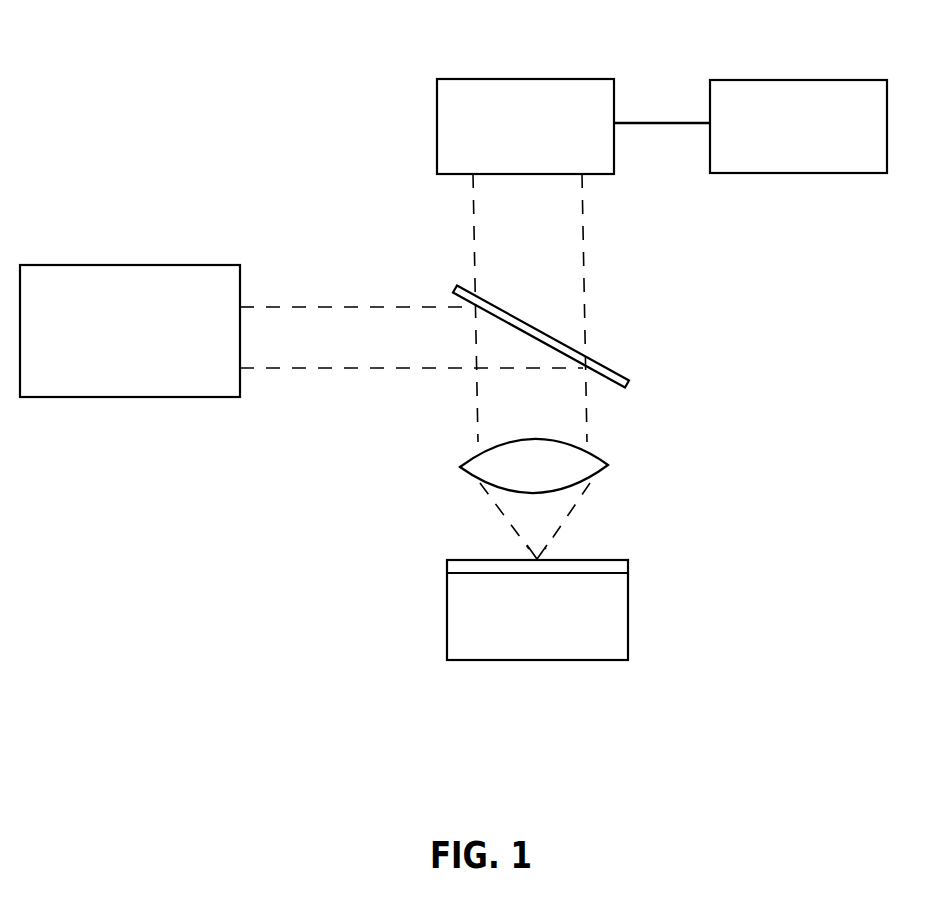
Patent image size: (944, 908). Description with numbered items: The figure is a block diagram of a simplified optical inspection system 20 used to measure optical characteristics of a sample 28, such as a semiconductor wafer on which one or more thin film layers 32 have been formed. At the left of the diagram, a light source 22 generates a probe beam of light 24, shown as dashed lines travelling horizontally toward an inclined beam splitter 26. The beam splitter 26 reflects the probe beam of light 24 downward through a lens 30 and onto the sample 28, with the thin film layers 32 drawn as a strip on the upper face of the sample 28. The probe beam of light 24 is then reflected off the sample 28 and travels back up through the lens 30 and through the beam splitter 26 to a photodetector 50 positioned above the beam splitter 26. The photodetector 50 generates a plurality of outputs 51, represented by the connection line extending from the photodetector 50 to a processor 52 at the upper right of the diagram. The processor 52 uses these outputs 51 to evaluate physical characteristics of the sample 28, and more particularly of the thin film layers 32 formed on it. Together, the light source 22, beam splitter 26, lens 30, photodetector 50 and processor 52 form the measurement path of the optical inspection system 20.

The optical inspection system 20 is at (717, 262).
The light source 22 is at (117, 265).
The probe beam of light 24 is at (320, 307).
The beam splitter 26 is at (607, 368).
The sample 28 is at (628, 600).
The lens 30 is at (596, 455).
The thin film layers 32 is at (610, 560).
The photodetector 50 is at (503, 78).
The outputs 51 is at (645, 123).
The processor 52 is at (750, 78).